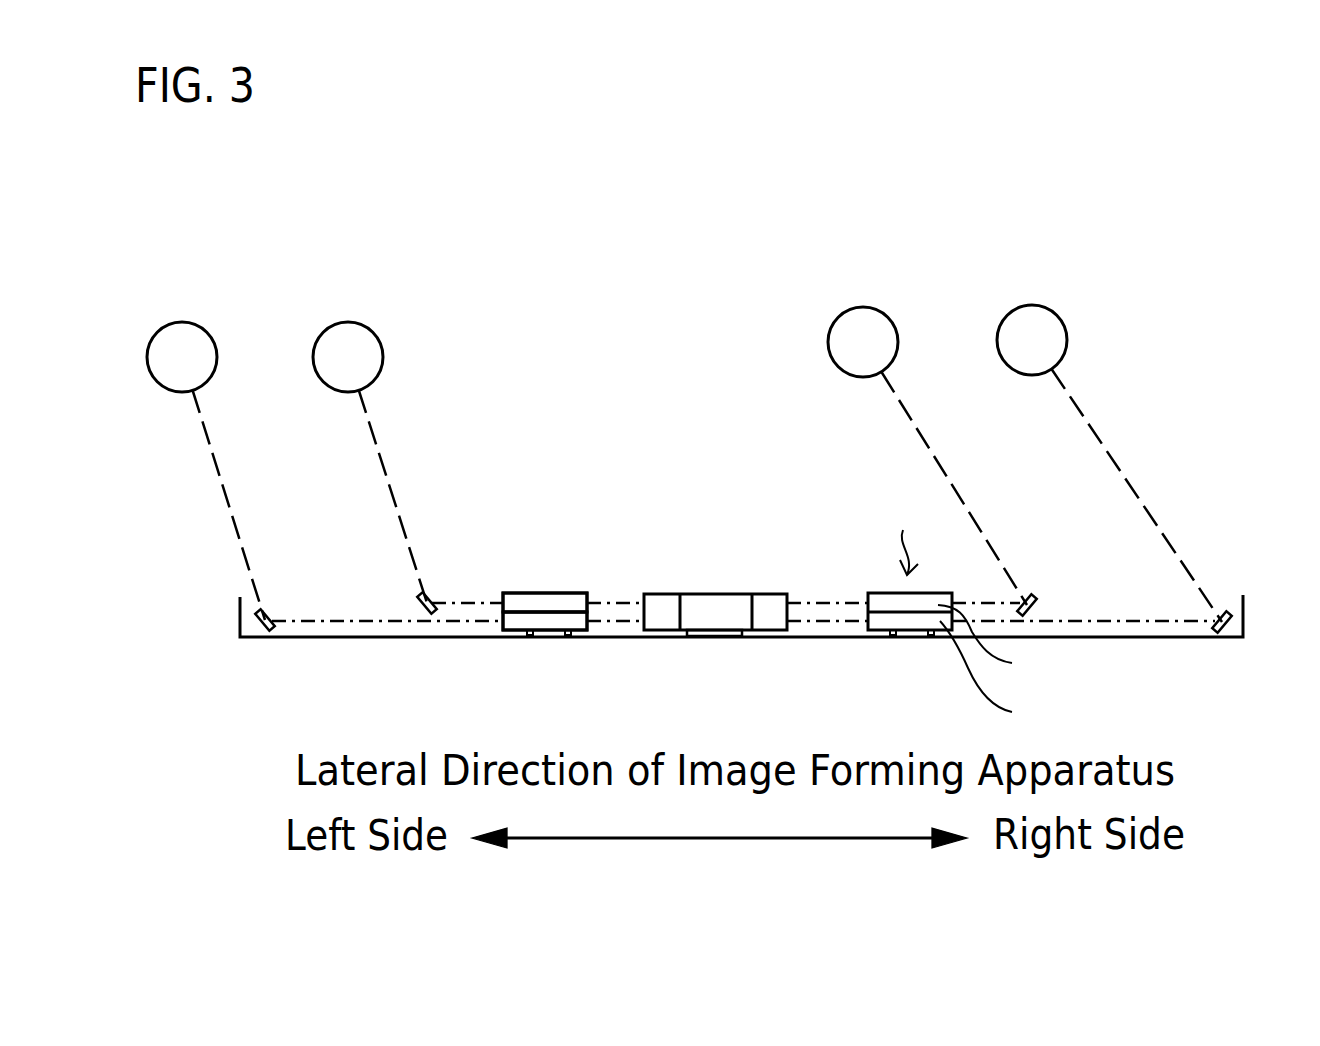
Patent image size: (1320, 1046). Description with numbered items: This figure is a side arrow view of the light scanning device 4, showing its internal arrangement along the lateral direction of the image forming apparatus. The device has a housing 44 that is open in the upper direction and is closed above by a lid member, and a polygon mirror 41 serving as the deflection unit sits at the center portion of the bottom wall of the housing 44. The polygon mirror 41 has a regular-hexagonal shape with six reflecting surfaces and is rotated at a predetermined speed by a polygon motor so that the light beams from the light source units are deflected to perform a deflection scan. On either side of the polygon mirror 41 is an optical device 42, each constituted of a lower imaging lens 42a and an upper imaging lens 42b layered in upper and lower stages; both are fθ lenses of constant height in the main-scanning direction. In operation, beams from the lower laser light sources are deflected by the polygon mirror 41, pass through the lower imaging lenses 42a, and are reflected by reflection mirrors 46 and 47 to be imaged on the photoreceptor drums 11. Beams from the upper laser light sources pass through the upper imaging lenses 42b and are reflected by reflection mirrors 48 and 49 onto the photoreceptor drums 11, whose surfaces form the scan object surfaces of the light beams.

The light scanning device 4 is at (506, 212).
The photoreceptor drum 11 is at (181, 322).
The polygon mirror 41 is at (715, 594).
The optical device 42 is at (538, 577).
The lower imaging lens 42a is at (520, 621).
The upper imaging lens 42b is at (517, 603).
The housing 44 is at (1247, 607).
The reflection mirror 46 is at (1227, 632).
The reflection mirror 47 is at (263, 631).
The reflection mirror 48 is at (1036, 606).
The reflection mirror 49 is at (420, 606).